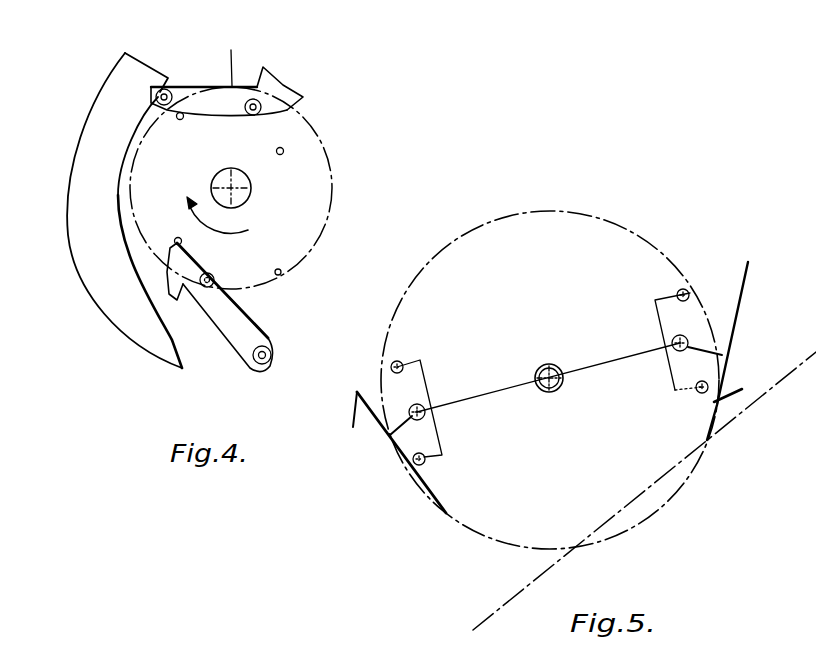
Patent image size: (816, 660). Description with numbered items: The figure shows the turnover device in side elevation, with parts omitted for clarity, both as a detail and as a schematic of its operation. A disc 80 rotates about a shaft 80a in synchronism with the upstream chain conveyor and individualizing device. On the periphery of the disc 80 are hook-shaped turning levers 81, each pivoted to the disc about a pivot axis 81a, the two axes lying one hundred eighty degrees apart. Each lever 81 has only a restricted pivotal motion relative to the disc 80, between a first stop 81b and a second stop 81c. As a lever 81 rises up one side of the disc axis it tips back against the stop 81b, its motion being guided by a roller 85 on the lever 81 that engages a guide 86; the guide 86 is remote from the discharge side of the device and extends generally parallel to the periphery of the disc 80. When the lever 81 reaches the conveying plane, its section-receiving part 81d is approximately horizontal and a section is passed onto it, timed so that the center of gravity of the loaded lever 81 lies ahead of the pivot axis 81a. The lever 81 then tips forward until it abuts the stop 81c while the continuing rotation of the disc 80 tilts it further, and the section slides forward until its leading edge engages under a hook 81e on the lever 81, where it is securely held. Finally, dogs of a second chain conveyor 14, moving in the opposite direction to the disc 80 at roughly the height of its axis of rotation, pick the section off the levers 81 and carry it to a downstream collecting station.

In FIG. 4, the disc 80 is at (333, 186).
In FIG. 5, the disc 80 is at (660, 268).
In FIG. 4, the shaft 80a is at (249, 193).
In FIG. 5, the shaft 80a is at (540, 366).
In FIG. 4, the lever 81 is at (222, 86).
In FIG. 5, the lever 81 is at (420, 493).
In FIG. 4, the pivot axis 81a is at (257, 98).
In FIG. 5, the pivot axis 81a is at (426, 418).
In FIG. 4, the stop 81b is at (180, 120).
In FIG. 5, the stop 81b is at (425, 462).
In FIG. 4, the stop 81c is at (280, 155).
In FIG. 5, the stop 81c is at (391, 361).
In FIG. 4, the section-receiving part 81d is at (238, 55).
In FIG. 4, the hook 81e is at (288, 90).
In FIG. 5, the hook 81e is at (353, 423).
In FIG. 4, the roller 85 is at (169, 89).
In FIG. 4, the guide 86 is at (89, 118).
In FIG. 5, the second chain conveyor 14 is at (506, 608).